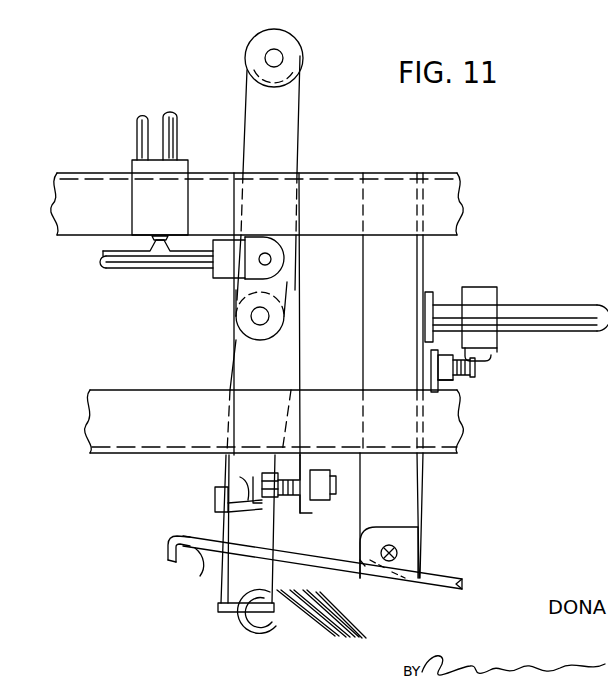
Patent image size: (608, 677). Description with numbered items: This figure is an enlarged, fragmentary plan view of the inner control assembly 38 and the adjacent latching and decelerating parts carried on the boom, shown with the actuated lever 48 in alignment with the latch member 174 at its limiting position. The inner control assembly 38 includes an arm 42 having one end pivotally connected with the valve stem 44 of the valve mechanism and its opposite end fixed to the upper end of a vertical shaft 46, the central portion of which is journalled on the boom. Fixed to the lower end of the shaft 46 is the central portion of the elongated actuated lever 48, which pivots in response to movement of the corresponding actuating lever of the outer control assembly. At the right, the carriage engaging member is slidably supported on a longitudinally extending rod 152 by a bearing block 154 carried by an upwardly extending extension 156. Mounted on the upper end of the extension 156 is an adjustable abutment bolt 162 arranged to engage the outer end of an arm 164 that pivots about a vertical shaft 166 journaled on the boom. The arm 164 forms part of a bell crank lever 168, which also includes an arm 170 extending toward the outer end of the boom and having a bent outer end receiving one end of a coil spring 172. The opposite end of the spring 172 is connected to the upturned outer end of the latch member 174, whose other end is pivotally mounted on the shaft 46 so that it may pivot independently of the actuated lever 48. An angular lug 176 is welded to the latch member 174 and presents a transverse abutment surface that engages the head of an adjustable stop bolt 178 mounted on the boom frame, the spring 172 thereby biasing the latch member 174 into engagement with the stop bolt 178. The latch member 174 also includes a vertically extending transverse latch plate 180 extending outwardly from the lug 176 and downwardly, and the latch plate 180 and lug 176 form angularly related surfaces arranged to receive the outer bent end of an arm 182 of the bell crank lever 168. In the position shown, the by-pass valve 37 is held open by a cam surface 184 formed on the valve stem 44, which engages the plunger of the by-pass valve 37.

The by-pass valve 37 is at (137, 192).
The inner control assembly 38 is at (483, 190).
The arm 42 is at (244, 297).
The valve stem 44 is at (125, 266).
The vertical shaft 46 is at (258, 316).
The actuated lever 48 is at (251, 120).
The rod 152 is at (555, 312).
The bearing block 154 is at (485, 295).
The extension 156 is at (497, 358).
The abutment bolt 162 is at (445, 378).
The arm 164 is at (445, 362).
The vertical shaft 166 is at (396, 553).
The bell crank lever 168 is at (358, 560).
The arm 170 is at (440, 586).
The coil spring 172 is at (287, 630).
The latch member 174 is at (226, 508).
The angular lug 176 is at (240, 477).
The stop bolt 178 is at (272, 472).
The latch plate 180 is at (213, 529).
The arm 182 is at (200, 552).
The cam surface 184 is at (160, 252).